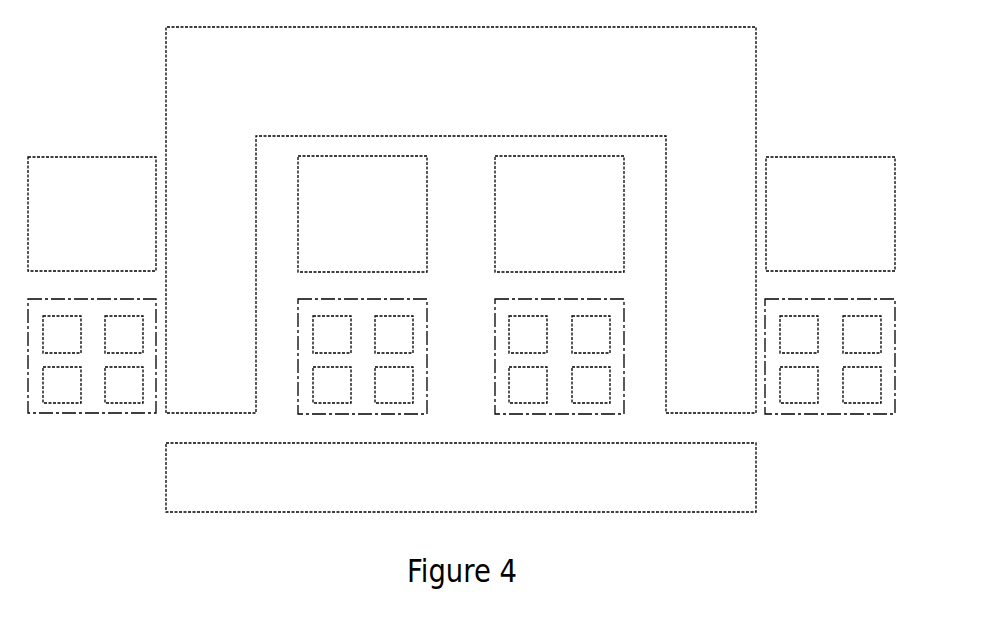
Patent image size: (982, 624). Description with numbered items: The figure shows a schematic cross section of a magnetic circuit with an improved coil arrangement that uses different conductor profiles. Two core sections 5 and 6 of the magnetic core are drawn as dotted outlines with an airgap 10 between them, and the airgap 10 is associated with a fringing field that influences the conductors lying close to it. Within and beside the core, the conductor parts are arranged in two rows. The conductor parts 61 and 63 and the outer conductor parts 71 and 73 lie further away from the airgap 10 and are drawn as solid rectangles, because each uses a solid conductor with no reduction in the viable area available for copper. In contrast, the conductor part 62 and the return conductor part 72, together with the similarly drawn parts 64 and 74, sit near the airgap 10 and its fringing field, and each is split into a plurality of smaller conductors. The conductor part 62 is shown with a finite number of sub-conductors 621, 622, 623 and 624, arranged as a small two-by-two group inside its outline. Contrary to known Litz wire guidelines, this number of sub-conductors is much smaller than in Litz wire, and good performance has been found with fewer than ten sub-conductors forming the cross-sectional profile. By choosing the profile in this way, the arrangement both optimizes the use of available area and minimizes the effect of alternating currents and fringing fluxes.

The core section 5 is at (183, 52).
The core section 6 is at (183, 500).
The airgap 10 is at (640, 428).
The conductor part 61 is at (362, 185).
The conductor part 62 is at (361, 376).
The second light emitting unit 63 is at (558, 185).
The second sensor array 64 is at (558, 383).
The sub-conductor 621 is at (323, 336).
The sub-conductor 622 is at (400, 336).
The sub-conductor 623 is at (323, 378).
The sub-conductor 624 is at (400, 378).
The conductor part 71 is at (92, 185).
The return conductor part 72 is at (92, 383).
The second outer light emitting unit 73 is at (830, 185).
The second outer sensor array 74 is at (829, 383).